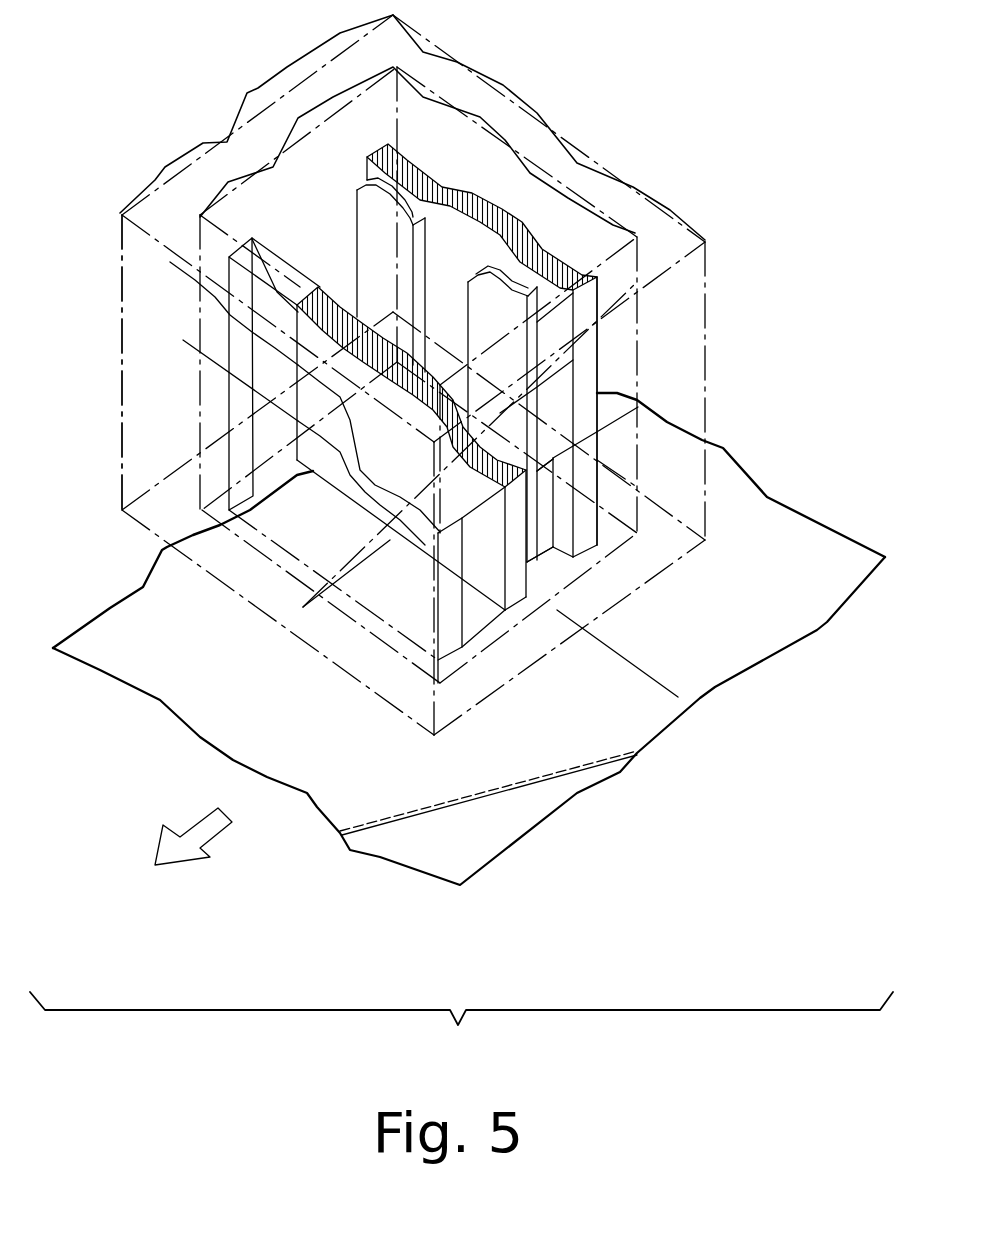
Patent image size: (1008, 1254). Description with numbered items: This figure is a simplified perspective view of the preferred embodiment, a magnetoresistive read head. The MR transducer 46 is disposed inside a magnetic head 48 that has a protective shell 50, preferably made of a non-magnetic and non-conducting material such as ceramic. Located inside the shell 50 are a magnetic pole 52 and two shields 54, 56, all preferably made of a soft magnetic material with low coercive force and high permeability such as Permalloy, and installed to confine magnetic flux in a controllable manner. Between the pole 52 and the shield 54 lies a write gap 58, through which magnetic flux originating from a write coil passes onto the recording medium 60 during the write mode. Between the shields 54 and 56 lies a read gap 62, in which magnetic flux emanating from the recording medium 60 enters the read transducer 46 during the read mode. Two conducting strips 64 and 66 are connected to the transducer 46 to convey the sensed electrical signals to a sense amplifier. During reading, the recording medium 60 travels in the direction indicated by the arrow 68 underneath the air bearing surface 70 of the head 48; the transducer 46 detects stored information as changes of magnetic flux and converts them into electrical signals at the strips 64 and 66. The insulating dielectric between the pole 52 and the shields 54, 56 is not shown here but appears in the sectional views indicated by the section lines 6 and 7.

The MR transducer 46 is at (552, 460).
The magnetic head 48 is at (175, 85).
The protective shell 50 is at (122, 312).
The magnetic pole 52 is at (452, 652).
The shield 54 is at (555, 605).
The shield 56 is at (590, 548).
The write gap 58 is at (477, 617).
The recording medium 60 is at (123, 634).
The read gap 62 is at (552, 560).
The conducting strip 64 is at (376, 259).
The conducting strip 66 is at (512, 330).
The arrow 68 is at (190, 828).
The air bearing surface 70 is at (168, 541).
The section line 6- 6 is at (183, 340).
The section line 7- 7 is at (303, 607).